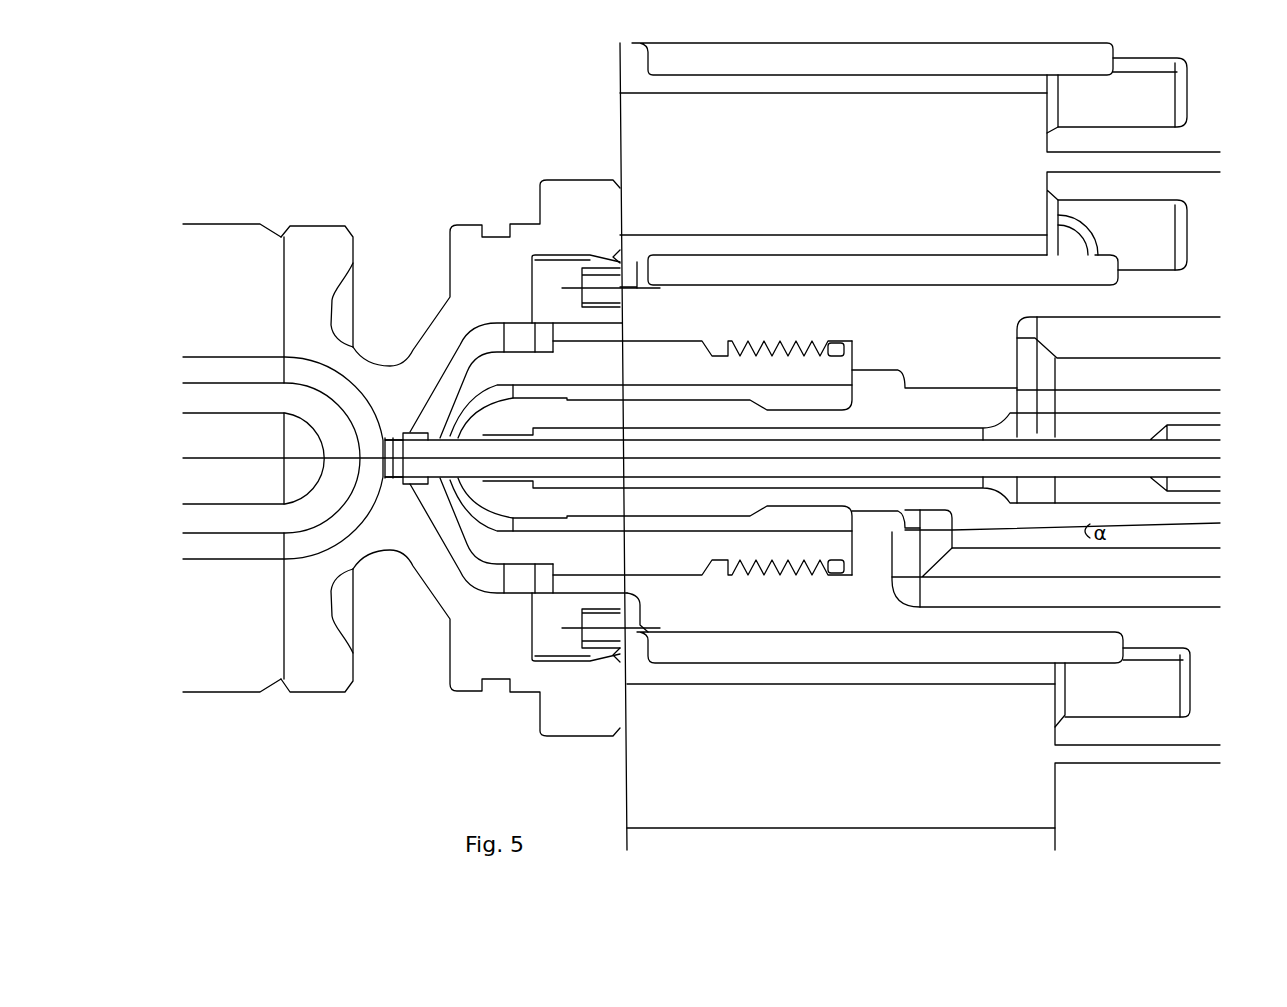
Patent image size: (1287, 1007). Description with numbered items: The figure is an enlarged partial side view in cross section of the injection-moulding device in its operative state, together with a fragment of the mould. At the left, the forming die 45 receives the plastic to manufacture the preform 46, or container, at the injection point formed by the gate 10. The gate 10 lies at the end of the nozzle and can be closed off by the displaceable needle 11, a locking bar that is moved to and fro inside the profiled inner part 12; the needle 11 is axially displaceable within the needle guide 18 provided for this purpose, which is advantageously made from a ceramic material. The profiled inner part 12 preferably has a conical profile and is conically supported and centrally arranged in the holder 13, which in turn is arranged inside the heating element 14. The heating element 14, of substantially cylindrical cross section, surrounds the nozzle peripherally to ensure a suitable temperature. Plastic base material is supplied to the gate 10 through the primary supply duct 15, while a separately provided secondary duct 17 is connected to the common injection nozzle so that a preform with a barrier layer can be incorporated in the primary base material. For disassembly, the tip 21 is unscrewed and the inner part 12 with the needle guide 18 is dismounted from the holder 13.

The gate 10 is at (398, 470).
The needle 11 is at (680, 468).
The profiled inner part 12 is at (520, 504).
The holder 13 is at (676, 317).
The heating element 14 is at (867, 270).
The primary supply duct 15 is at (987, 592).
The secondary duct 17 is at (1150, 333).
The needle guide 18 is at (1072, 489).
The tip 21 is at (523, 547).
The forming die 45 is at (319, 224).
The preform 46 is at (302, 560).